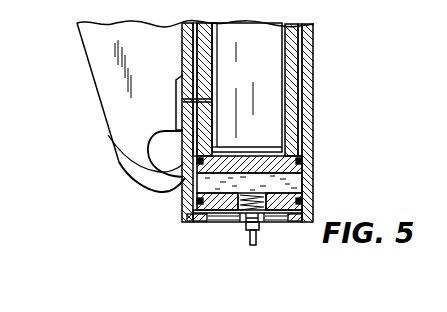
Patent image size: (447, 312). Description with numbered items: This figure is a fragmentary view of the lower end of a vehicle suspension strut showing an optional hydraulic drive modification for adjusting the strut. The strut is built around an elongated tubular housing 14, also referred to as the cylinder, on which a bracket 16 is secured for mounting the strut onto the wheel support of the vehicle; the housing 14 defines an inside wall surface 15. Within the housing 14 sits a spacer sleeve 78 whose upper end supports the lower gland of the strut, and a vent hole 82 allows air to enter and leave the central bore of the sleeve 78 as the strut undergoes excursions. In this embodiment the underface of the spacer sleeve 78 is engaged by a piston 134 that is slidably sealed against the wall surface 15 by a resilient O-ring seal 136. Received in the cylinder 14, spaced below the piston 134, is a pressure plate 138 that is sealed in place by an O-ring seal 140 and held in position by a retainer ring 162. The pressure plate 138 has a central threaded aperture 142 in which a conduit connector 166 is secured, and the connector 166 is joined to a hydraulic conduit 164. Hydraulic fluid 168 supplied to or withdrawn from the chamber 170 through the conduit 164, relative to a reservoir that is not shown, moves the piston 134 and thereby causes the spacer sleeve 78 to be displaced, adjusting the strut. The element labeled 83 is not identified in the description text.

The tubular housing 14 is at (307, 45).
The inside wall surface 15 is at (195, 42).
The bracket 16 is at (100, 78).
The spacer sleeve 78 is at (293, 81).
The vent hole 82 is at (215, 104).
The bracket 83 is at (177, 104).
The piston 134 is at (255, 154).
The resilient O-ring seal 136 is at (303, 160).
The pressure plate 138 is at (298, 222).
The O-ring seal 140 is at (315, 204).
The central threaded aperture 142 is at (315, 173).
The retainer ring 162 is at (197, 225).
The hydraulic conduit 164 is at (249, 240).
The conduit connector 166 is at (182, 126).
The hydraulic fluid 168 is at (176, 194).
The chamber 170 is at (111, 135).